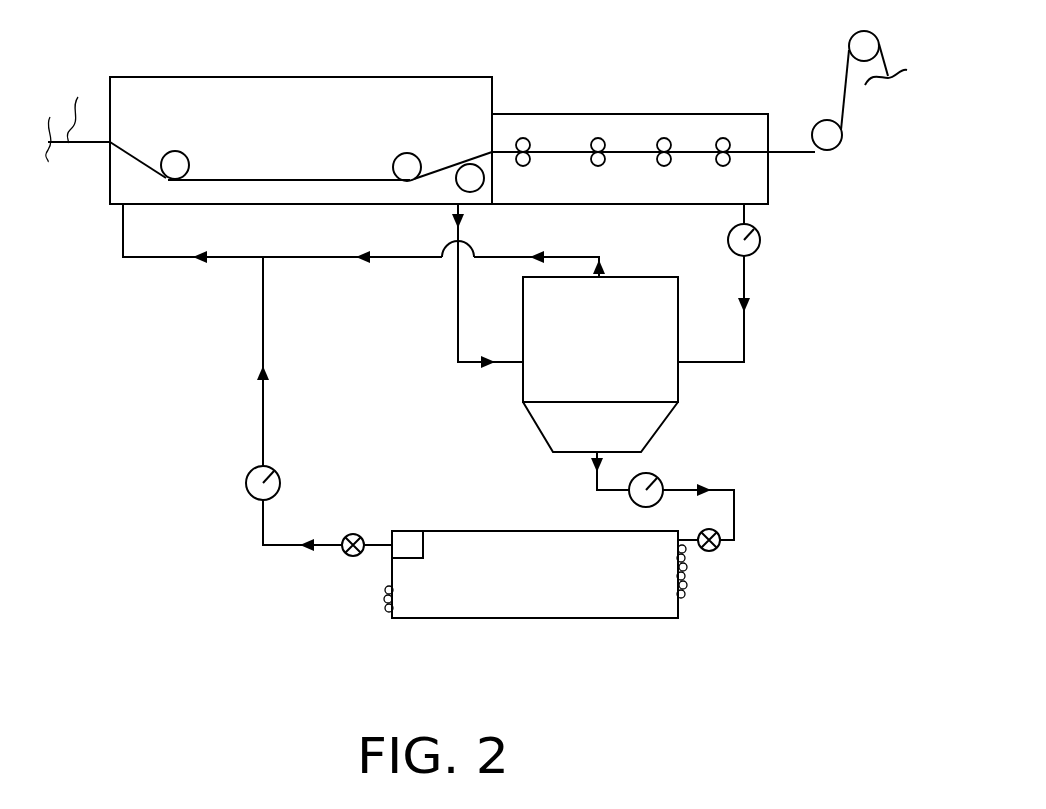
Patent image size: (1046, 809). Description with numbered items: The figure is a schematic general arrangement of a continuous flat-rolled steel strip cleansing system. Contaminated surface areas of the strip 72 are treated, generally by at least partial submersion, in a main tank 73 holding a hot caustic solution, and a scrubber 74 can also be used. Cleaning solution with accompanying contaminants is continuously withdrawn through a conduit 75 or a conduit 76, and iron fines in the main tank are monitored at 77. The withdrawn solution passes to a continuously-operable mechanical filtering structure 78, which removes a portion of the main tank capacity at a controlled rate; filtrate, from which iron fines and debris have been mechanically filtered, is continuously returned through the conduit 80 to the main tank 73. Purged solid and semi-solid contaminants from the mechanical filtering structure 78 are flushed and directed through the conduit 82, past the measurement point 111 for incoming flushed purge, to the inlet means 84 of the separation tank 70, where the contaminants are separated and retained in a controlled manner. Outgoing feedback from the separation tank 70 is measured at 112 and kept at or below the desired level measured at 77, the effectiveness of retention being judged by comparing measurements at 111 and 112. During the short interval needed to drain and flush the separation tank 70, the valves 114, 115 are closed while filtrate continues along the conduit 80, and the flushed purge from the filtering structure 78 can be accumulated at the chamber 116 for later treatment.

The separation tank 70 is at (543, 586).
The strip 72 is at (78, 106).
The main tank 73 is at (296, 147).
The scrubber 74 is at (657, 113).
The conduit 75 is at (457, 325).
The conduit 76 is at (748, 328).
The iron fines monitoring 77 is at (762, 237).
The mechanical filtering structure 78 is at (614, 345).
The conduit 80 is at (557, 258).
The conduit 82 is at (588, 482).
The inlet means 84 is at (690, 567).
The incoming purge measurement point 111 is at (667, 478).
The feedback measurement point 112 is at (288, 483).
The valve 114 is at (725, 548).
The valve 115 is at (348, 560).
The chamber 116 is at (609, 445).